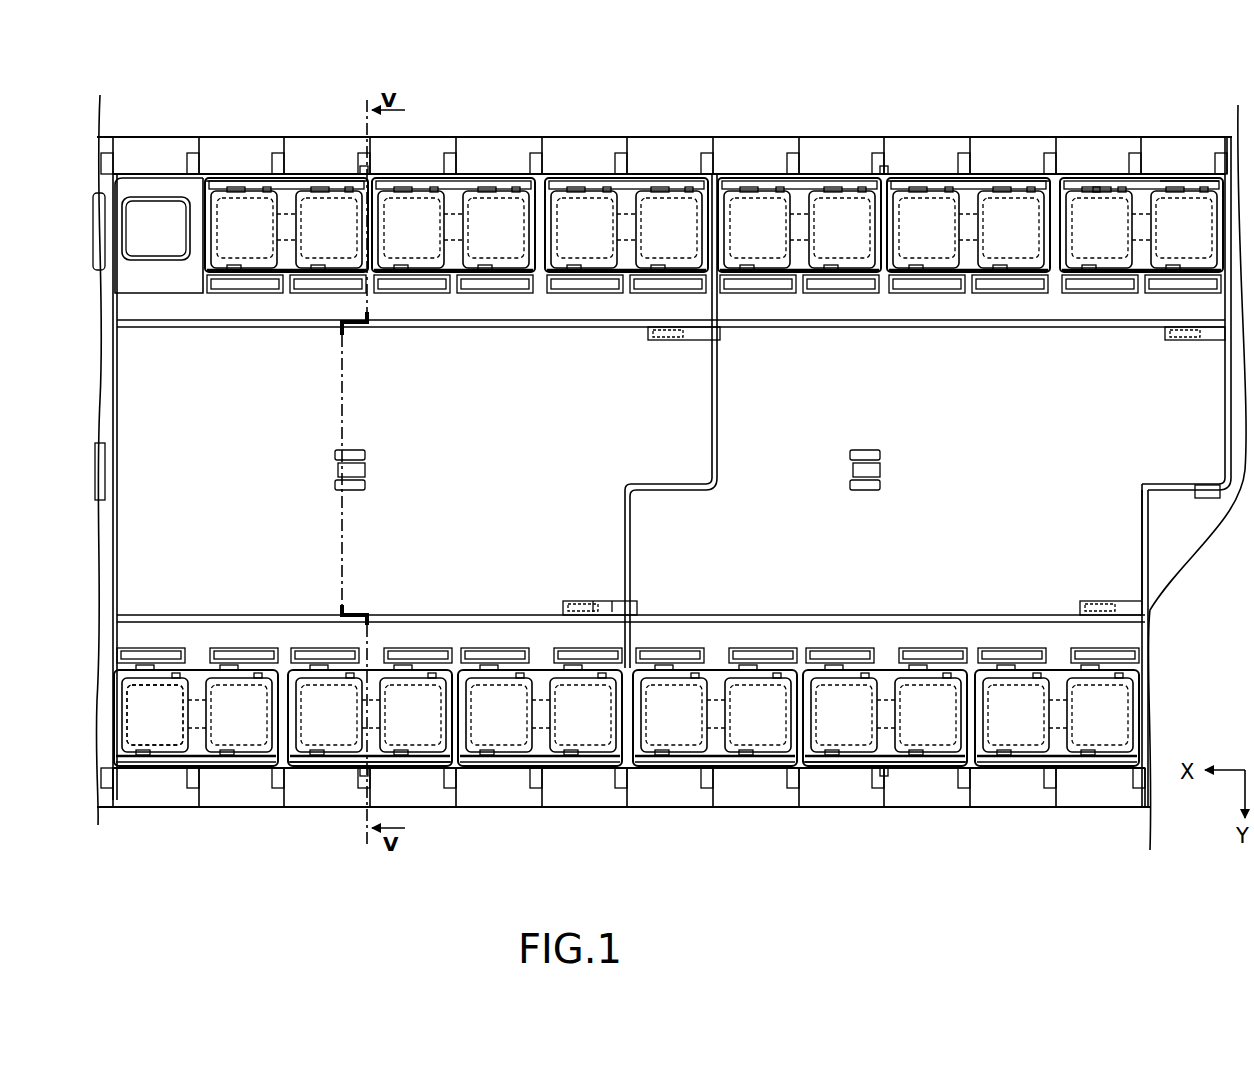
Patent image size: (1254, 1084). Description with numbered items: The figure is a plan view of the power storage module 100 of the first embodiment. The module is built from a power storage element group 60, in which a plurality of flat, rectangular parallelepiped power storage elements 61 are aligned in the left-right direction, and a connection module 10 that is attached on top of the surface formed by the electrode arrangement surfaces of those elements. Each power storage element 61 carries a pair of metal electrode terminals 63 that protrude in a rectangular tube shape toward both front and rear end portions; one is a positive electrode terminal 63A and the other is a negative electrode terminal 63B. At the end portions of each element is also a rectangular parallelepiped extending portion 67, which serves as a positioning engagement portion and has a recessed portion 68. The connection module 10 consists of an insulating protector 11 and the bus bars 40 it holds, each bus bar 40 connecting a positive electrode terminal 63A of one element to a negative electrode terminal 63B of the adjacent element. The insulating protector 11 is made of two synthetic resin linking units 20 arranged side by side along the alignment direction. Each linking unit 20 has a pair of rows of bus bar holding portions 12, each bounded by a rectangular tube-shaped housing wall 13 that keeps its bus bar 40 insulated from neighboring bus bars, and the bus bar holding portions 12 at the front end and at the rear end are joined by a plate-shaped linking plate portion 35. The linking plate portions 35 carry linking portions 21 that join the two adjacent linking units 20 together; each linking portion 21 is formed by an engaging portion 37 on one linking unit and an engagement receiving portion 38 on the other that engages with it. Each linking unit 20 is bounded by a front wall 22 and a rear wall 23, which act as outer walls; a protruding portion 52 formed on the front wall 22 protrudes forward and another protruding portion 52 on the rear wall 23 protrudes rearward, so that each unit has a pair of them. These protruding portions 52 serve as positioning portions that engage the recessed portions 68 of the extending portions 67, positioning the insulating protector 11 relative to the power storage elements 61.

The power storage module 100 is at (918, 58).
The connection module 10 is at (884, 57).
The insulating protector 11 is at (853, 47).
The linking unit 20 is at (610, 405).
The bus bar 40 is at (800, 228).
The power storage element group 60 is at (854, 126).
The power storage element 61 is at (141, 153).
The extending portion 67 is at (497, 150).
The recessed portion 68 is at (545, 160).
The electrode terminal 63 is at (250, 106).
The positive electrode terminal 63A is at (152, 218).
The negative electrode terminal 63B is at (155, 710).
The protruding portion 52 is at (360, 170).
The rear wall 23 is at (405, 178).
The front wall 22 is at (408, 766).
The linking portion 21 is at (497, 808).
The engagement receiving portion 38 is at (598, 606).
The engaging portion 37 is at (610, 605).
The bus bar holding portion 12 is at (1125, 196).
The housing wall 13 is at (1190, 182).
The linking plate portion 35 is at (1118, 553).